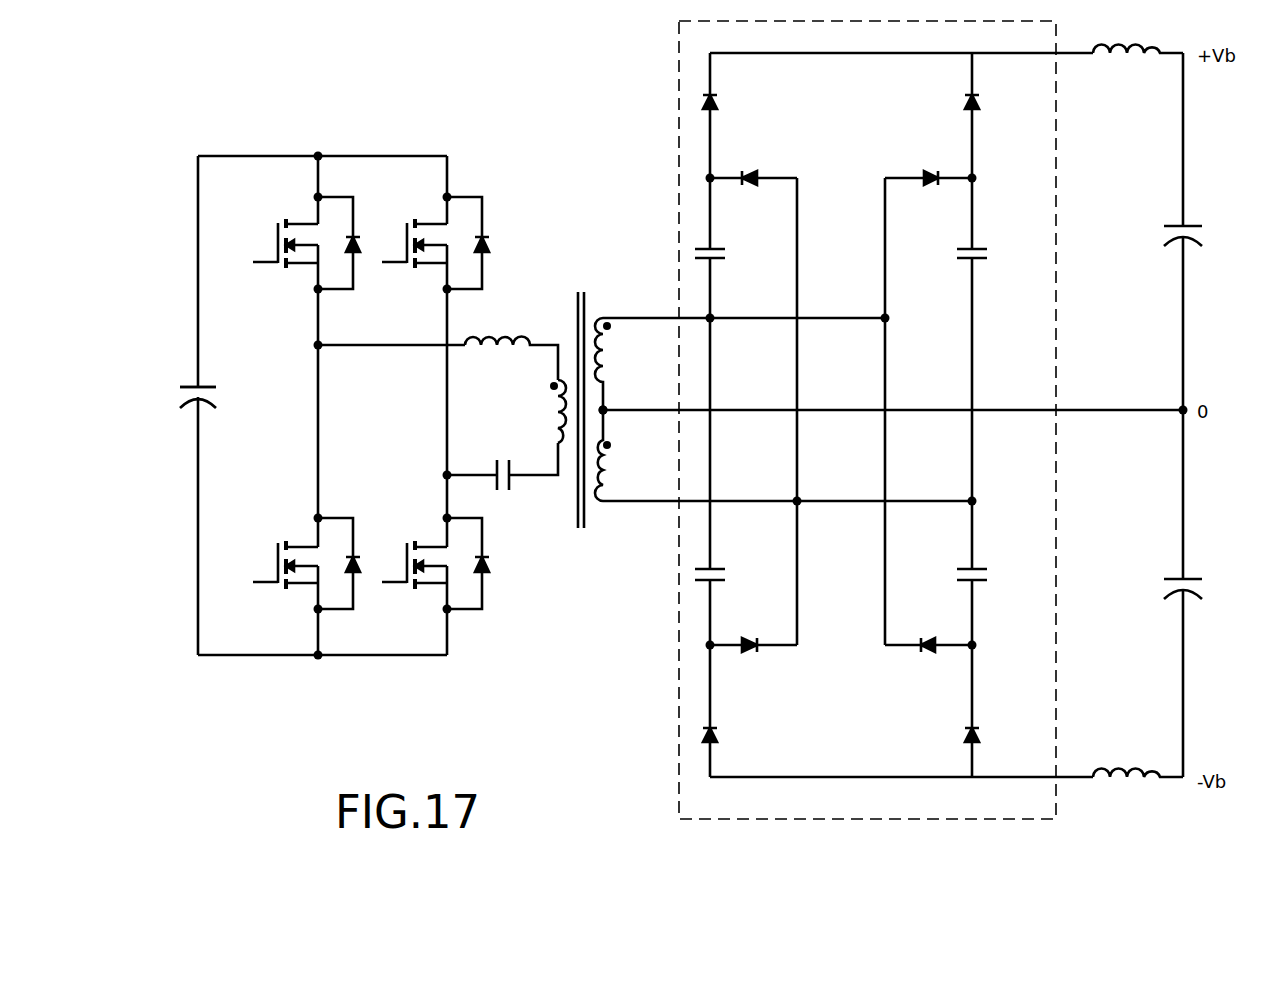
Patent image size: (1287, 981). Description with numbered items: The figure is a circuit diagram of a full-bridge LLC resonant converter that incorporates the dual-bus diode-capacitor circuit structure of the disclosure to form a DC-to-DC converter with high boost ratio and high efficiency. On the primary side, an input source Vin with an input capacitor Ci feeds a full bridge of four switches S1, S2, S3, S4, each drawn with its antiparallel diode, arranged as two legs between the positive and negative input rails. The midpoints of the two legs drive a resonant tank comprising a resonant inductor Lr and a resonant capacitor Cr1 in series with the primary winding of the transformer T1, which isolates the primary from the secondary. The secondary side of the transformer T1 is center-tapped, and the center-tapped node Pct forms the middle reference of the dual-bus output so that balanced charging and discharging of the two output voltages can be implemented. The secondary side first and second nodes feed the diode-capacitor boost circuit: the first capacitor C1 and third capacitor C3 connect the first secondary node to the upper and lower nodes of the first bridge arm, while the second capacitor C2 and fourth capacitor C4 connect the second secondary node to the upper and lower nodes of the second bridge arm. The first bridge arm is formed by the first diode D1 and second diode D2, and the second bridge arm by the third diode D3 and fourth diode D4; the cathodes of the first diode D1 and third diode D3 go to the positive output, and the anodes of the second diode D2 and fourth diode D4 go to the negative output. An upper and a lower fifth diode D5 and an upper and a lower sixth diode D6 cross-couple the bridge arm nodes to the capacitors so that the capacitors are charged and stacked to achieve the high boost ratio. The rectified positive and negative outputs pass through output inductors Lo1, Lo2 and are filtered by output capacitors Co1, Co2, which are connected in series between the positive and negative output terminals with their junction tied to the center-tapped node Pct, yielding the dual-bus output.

The input voltage source Vin is at (175, 380).
The input capacitor Ci is at (207, 384).
The first switch S1 is at (304, 243).
The second switch S2 is at (304, 563).
The third switch S3 is at (433, 243).
The fourth switch S4 is at (433, 563).
The resonant inductor Lr is at (511, 345).
The resonant capacitor Cr1 is at (502, 461).
The transformer T1 is at (577, 412).
The center-tapped node Pct is at (606, 416).
The first diode D1 is at (988, 96).
The second diode D2 is at (989, 729).
The third diode D3 is at (727, 96).
The fourth diode D4 is at (726, 729).
The fifth diode D5 is at (928, 415).
The sixth diode D6 is at (753, 415).
The first capacitor C1 is at (987, 240).
The second capacitor C2 is at (725, 240).
The third capacitor C3 is at (983, 560).
The fourth capacitor C4 is at (726, 562).
The first output inductor Lo1 is at (1138, 35).
The second output inductor Lo2 is at (1138, 760).
The first output capacitor Co1 is at (1197, 222).
The second output capacitor Co2 is at (1197, 575).